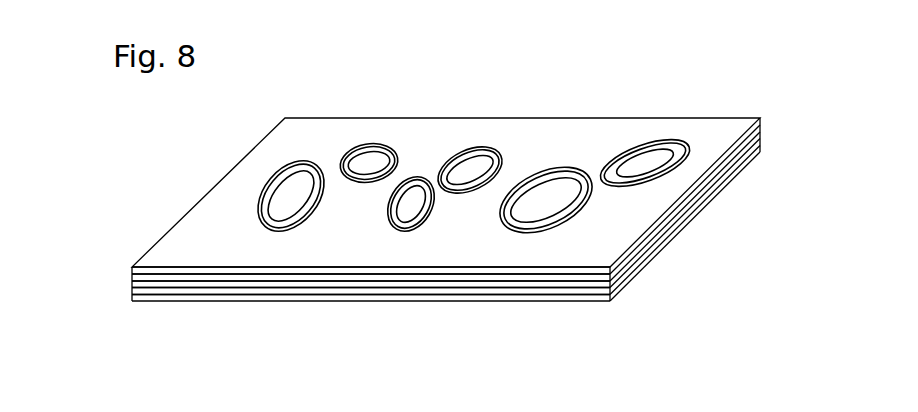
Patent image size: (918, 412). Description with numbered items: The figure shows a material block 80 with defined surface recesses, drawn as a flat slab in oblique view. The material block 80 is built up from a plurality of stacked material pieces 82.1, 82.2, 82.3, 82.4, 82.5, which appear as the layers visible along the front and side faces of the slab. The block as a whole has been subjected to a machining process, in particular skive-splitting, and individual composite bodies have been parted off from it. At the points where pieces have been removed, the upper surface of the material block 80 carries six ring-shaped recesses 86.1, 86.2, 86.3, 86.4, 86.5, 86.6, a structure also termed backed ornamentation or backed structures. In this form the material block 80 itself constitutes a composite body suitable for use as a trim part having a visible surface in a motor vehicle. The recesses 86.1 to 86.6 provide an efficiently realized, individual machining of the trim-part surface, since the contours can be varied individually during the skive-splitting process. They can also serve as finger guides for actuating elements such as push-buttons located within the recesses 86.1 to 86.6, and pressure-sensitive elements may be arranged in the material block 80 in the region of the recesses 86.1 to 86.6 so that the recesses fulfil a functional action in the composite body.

The material block 80 is at (577, 59).
The material piece 82.1 is at (131, 268).
The material piece 82.2 is at (131, 274).
The material piece 82.3 is at (131, 282).
The material piece 82.4 is at (131, 289).
The material piece 82.5 is at (131, 296).
The recess 86.1 is at (657, 160).
The recess 86.2 is at (545, 202).
The recess 86.3 is at (472, 168).
The recess 86.4 is at (409, 206).
The recess 86.5 is at (371, 162).
The recess 86.6 is at (291, 198).